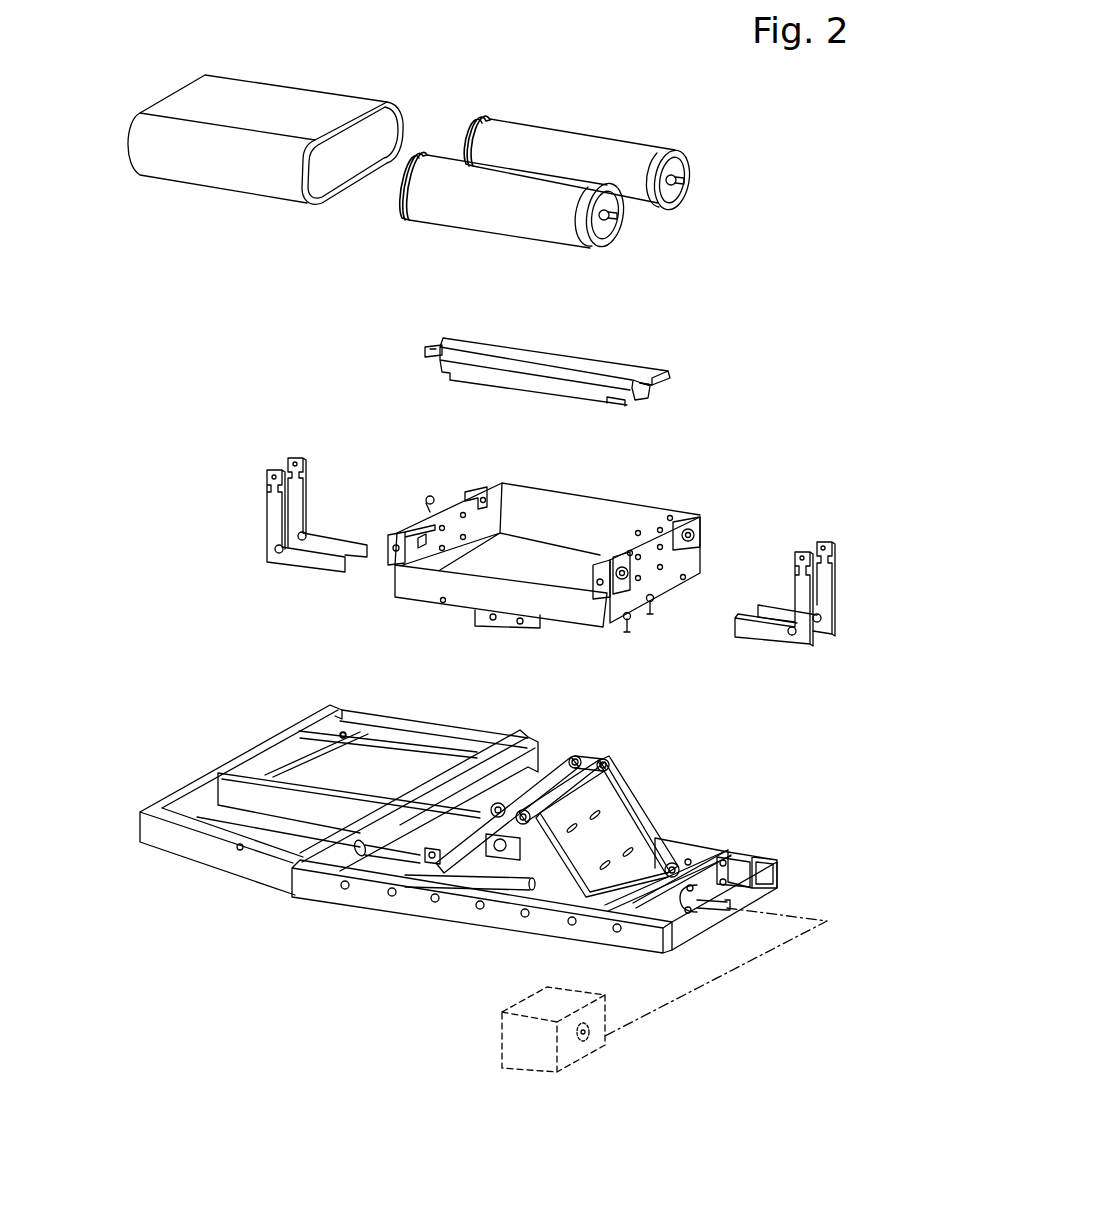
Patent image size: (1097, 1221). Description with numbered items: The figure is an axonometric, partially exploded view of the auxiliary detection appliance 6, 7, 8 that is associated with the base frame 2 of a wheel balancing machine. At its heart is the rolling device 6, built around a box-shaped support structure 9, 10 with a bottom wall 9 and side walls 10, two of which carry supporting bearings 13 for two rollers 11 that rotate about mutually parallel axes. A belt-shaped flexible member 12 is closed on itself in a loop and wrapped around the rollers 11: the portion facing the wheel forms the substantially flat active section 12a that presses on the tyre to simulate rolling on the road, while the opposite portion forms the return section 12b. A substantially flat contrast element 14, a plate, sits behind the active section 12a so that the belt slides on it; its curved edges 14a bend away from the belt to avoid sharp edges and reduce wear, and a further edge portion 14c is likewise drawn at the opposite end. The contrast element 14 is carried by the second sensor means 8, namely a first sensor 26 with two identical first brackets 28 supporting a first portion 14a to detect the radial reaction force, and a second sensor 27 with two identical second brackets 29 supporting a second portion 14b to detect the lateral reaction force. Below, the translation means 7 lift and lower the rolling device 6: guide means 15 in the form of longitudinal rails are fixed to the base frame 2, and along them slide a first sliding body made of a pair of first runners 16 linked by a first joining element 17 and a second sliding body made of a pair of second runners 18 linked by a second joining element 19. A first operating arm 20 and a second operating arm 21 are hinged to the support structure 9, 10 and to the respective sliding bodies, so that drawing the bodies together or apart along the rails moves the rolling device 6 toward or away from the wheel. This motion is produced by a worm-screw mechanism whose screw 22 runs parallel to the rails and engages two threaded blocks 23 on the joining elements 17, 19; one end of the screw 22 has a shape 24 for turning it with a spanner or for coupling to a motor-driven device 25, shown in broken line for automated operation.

The base frame 2 is at (339, 803).
The rolling device 6 is at (560, 547).
The translation means 7 is at (557, 850).
The second sensor means 8 is at (506, 569).
The bottom wall 9 is at (546, 575).
The side walls 10 is at (428, 500).
The rollers 11 is at (530, 198).
The flexible member 12 is at (265, 144).
The active section 12a is at (250, 110).
The return section 12b is at (340, 177).
The supporting bearings 13 is at (485, 482).
The contrast element 14 is at (557, 350).
The curved edges 14a is at (608, 403).
The second portion 14b is at (441, 340).
The guide bar right tab 14c is at (655, 372).
The guide means 15 is at (742, 873).
The first runners 16 is at (362, 852).
The first joining element 17 is at (445, 835).
The second runners 18 is at (700, 845).
The second joining element 19 is at (712, 865).
The first operating arm 20 is at (438, 866).
The second operating arm 21 is at (558, 862).
The screw 22 is at (708, 912).
The threaded blocks 23 is at (423, 847).
The shape 24 is at (733, 912).
The motor-driven device 25 is at (500, 1042).
The first sensor 26 is at (267, 491).
The second sensor 27 is at (778, 562).
The first brackets 28 is at (297, 522).
The second brackets 29 is at (800, 602).